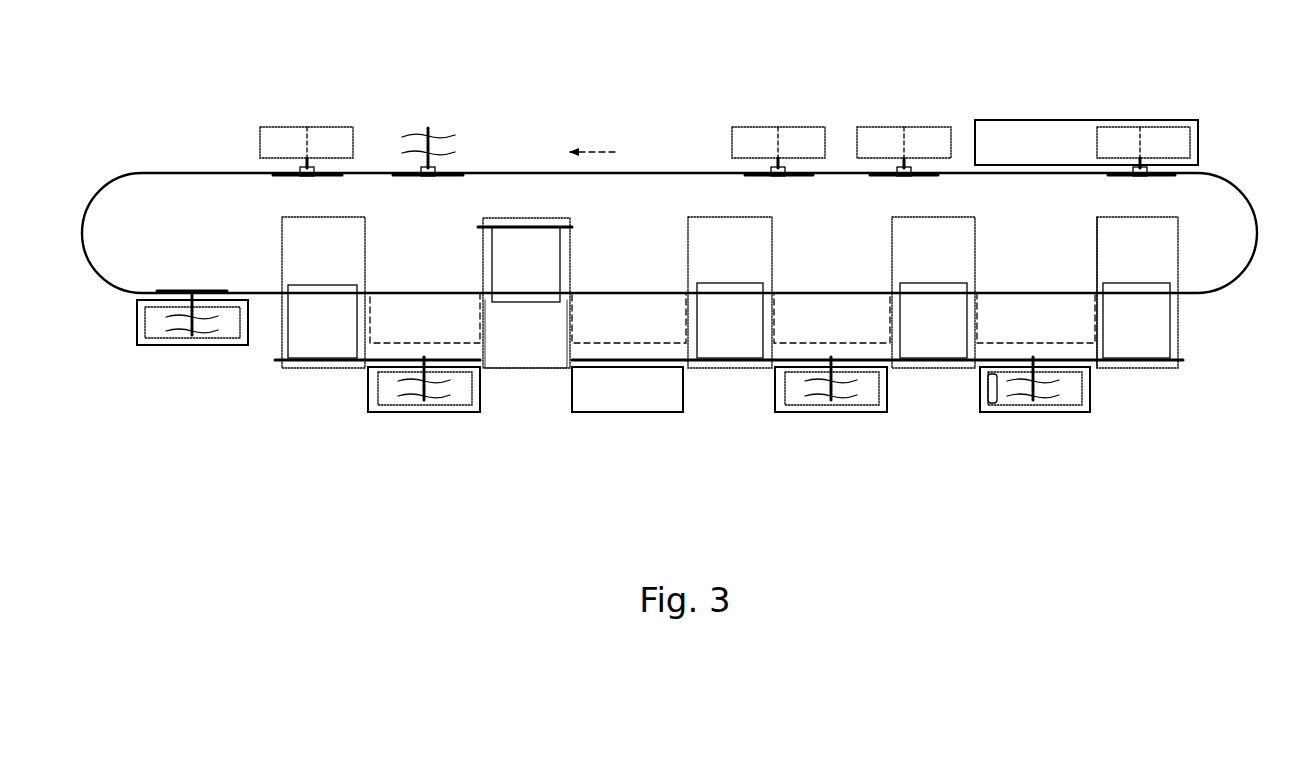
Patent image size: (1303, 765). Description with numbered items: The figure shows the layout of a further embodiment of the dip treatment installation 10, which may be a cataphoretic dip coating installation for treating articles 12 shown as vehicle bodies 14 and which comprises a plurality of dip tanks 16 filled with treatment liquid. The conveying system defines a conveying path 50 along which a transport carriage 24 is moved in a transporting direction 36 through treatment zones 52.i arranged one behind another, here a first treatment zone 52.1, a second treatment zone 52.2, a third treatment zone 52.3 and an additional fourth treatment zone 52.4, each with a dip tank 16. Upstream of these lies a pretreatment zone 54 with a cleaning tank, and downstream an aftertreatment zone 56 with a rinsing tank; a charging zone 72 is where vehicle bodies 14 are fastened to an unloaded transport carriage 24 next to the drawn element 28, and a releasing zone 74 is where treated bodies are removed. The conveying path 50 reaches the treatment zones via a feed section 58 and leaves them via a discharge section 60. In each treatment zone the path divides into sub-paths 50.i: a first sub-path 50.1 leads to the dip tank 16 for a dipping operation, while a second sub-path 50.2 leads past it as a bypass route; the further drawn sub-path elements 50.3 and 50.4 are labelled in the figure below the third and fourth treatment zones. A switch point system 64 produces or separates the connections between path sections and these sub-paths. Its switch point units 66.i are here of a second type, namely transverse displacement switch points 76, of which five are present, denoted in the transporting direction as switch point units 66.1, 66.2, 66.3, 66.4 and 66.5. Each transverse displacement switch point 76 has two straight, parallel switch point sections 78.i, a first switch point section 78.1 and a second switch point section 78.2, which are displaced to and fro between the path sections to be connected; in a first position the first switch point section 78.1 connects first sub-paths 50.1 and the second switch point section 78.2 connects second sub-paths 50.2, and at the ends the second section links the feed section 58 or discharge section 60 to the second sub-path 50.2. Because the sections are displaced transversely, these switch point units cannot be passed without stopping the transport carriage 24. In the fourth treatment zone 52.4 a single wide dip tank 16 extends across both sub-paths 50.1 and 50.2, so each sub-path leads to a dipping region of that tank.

The dip treatment installation 10 is at (930, 60).
The articles 12 is at (258, 138).
The vehicle bodies 14 is at (280, 135).
The dip tank 16 is at (1050, 120).
The transport carriage 24 is at (450, 168).
The transfer device 28 is at (435, 132).
The transporting direction 36 is at (598, 152).
The conveying path 50 is at (160, 168).
The first sub-path 50.1 is at (372, 390).
The second sub-path 50.2 is at (413, 292).
The third transport module 50.3 is at (790, 368).
The fourth transport module 50.4 is at (1000, 368).
The sub-paths 50.i is at (1072, 287).
The first treatment zone 52.1 is at (424, 482).
The second treatment zone 52.2 is at (630, 482).
The third treatment zone 52.3 is at (833, 482).
The fourth treatment zone 52.4 is at (1030, 482).
The treatment zones 52.i is at (345, 487).
The pretreatment zone 54 is at (152, 350).
The aftertreatment zone 56 is at (1143, 118).
The feed section 58 is at (240, 292).
The discharge section 60 is at (1210, 295).
The switch point system 64 is at (1197, 338).
The first switch point unit 66.1 is at (300, 372).
The second switch point unit 66.2 is at (510, 372).
The third switch point unit 66.3 is at (717, 372).
The fourth switch point unit 66.4 is at (913, 372).
The fifth switch point unit 66.5 is at (1125, 372).
The switch point units 66.i is at (1198, 262).
The charging zone 72 is at (302, 122).
The releasing zone 74 is at (770, 120).
The transverse displacement switch point 76 is at (280, 356).
The first switch point section 78.1 is at (328, 358).
The second switch point section 78.2 is at (333, 292).
The switch point sections 78.i is at (275, 272).